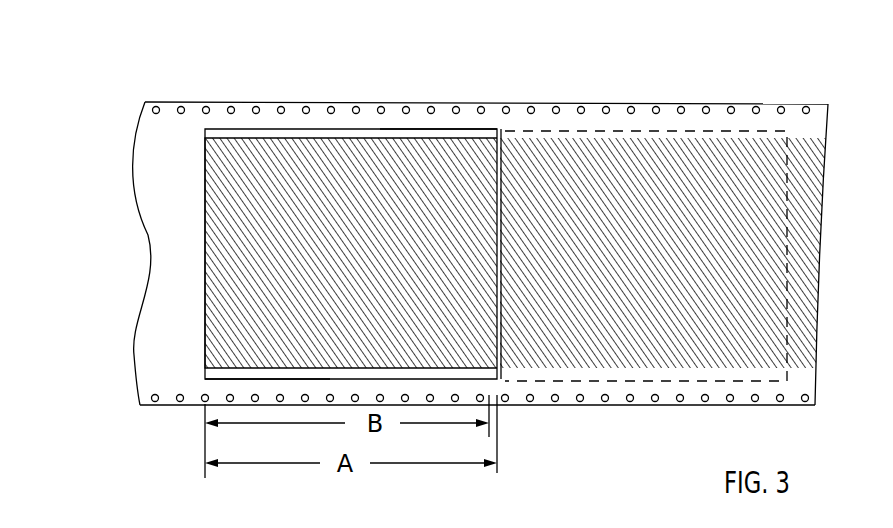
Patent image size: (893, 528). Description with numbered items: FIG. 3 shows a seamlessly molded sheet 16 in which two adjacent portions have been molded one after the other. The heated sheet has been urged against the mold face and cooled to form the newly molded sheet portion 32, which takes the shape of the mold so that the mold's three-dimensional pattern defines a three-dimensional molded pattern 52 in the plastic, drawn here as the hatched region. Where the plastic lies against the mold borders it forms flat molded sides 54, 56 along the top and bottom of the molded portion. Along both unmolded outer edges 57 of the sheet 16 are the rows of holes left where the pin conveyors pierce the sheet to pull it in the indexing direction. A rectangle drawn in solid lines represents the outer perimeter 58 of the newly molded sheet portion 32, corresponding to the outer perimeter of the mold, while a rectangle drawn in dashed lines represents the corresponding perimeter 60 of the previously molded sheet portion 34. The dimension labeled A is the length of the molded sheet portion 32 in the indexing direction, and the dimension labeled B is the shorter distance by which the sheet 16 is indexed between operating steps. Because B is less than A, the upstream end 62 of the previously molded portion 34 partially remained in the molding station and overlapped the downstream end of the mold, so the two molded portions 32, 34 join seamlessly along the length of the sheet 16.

The sheet 16 is at (141, 195).
The molded sheet portion 32 is at (320, 134).
The previously molded sheet portion 34 is at (572, 137).
The three-dimensional molded pattern 52 is at (205, 272).
The flat molded side 54 is at (267, 130).
The flat molded side 56 is at (213, 373).
The outer unmolded edges 57 is at (397, 110).
The outer perimeter 58 is at (445, 130).
The perimeter 60 is at (622, 130).
The upstream end 62 is at (500, 130).